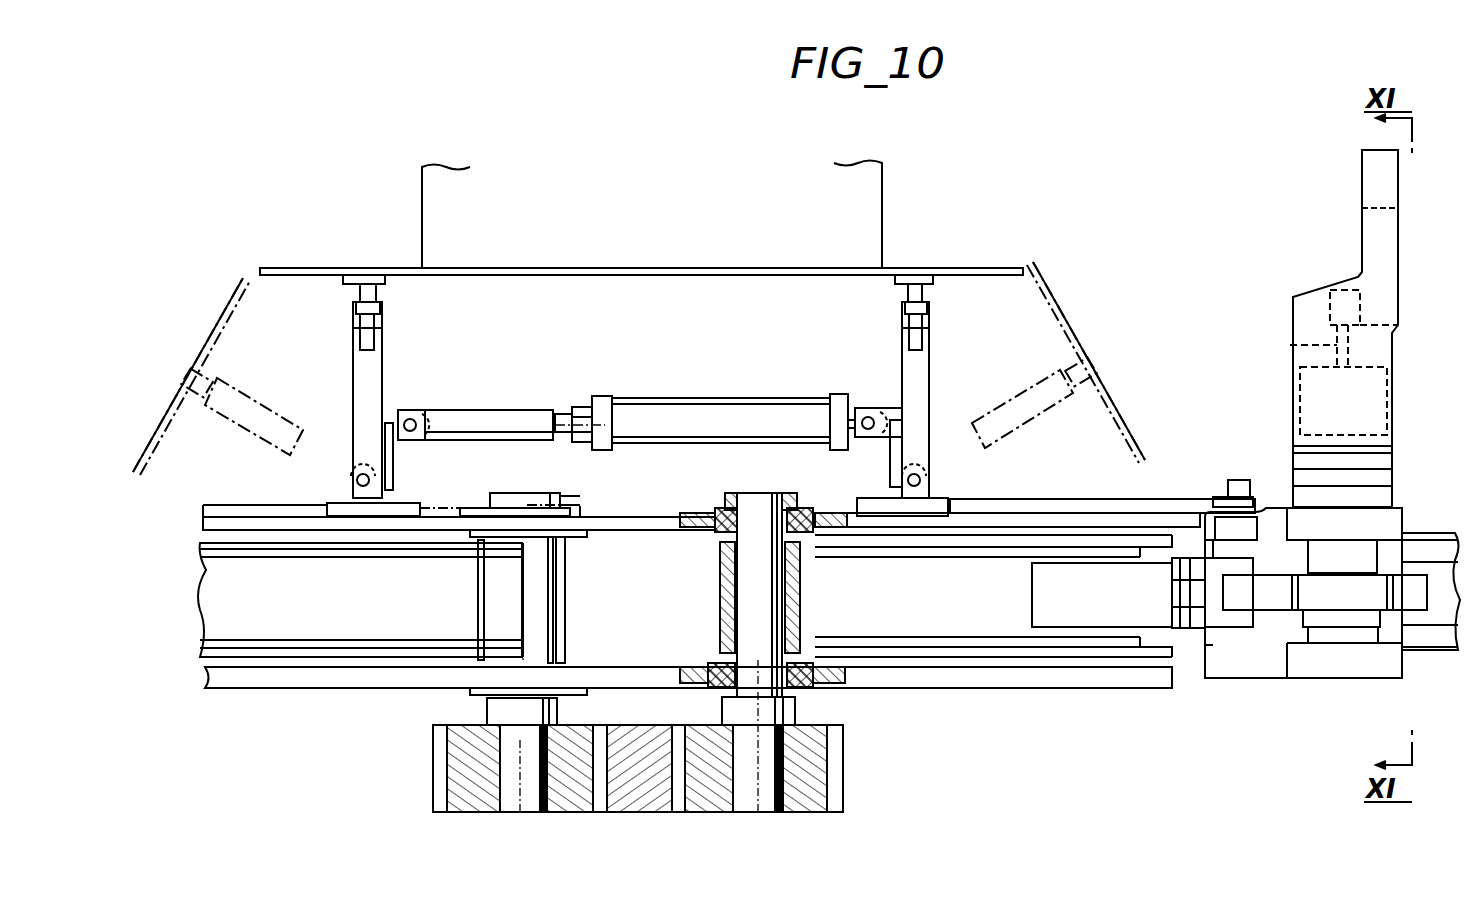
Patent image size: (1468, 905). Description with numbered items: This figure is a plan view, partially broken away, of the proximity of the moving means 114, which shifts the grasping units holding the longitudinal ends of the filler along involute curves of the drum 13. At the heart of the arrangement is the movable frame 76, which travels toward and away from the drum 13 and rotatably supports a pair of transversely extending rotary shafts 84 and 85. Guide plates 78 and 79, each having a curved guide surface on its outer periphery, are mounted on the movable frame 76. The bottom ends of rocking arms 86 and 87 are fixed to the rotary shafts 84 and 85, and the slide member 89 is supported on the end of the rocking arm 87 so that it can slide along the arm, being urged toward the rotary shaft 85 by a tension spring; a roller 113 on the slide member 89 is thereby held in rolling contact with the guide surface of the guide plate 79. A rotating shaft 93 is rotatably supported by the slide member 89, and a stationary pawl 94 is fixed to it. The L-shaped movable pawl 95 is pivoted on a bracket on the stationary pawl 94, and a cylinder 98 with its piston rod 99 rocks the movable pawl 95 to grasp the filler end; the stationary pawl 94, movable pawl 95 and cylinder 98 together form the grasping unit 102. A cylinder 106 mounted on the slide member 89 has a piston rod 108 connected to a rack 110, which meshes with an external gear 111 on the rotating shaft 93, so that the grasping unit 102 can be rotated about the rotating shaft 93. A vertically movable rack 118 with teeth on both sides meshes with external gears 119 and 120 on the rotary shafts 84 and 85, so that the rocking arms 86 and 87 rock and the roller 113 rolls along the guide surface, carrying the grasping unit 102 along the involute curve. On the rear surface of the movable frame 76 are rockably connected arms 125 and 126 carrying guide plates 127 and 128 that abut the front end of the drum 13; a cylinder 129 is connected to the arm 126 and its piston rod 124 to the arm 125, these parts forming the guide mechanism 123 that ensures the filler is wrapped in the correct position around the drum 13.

The drum 13 is at (882, 190).
The guide plate 127 is at (466, 276).
The guide plate 128 is at (822, 276).
The arm 125 is at (373, 377).
The arm 126 is at (905, 362).
The guide mechanism 123 is at (650, 393).
The piston rod 124 is at (562, 408).
The cylinder 129 is at (700, 415).
The guide plate 78 is at (268, 508).
The guide plate 79 is at (1066, 498).
The roller 113 is at (1228, 494).
The rocking arm 86 is at (213, 597).
The movable frame 76 is at (965, 676).
The rotary shaft 84 is at (543, 812).
The rotary shaft 85 is at (748, 588).
The moving means 114 is at (679, 792).
The external gear 119 is at (482, 812).
The rack 118 is at (652, 812).
The external gear 120 is at (824, 814).
The cylinder 106 is at (1040, 598).
The piston rod 108 is at (1190, 596).
The slide member 89 is at (1287, 609).
The rocking arm 87 is at (1182, 645).
The external gear 111 is at (1322, 581).
The rack 110 is at (1268, 610).
The rotating shaft 93 is at (1362, 636).
The grasping unit 102 is at (1352, 328).
The stationary pawl 94 is at (1388, 284).
The movable pawl 95 is at (1357, 275).
The piston rod 99 is at (1294, 345).
The cylinder 98 is at (1388, 410).